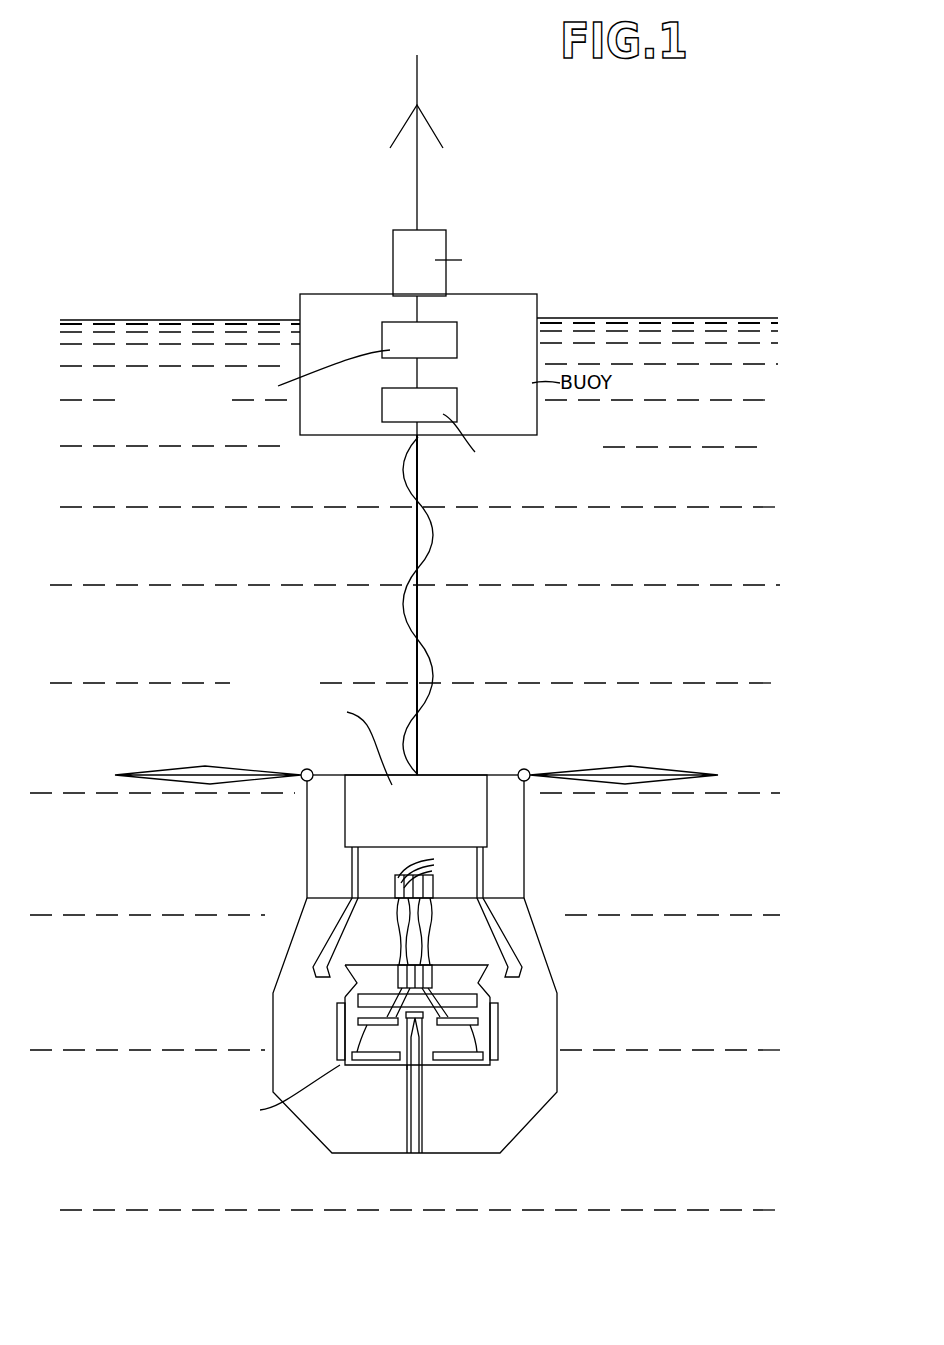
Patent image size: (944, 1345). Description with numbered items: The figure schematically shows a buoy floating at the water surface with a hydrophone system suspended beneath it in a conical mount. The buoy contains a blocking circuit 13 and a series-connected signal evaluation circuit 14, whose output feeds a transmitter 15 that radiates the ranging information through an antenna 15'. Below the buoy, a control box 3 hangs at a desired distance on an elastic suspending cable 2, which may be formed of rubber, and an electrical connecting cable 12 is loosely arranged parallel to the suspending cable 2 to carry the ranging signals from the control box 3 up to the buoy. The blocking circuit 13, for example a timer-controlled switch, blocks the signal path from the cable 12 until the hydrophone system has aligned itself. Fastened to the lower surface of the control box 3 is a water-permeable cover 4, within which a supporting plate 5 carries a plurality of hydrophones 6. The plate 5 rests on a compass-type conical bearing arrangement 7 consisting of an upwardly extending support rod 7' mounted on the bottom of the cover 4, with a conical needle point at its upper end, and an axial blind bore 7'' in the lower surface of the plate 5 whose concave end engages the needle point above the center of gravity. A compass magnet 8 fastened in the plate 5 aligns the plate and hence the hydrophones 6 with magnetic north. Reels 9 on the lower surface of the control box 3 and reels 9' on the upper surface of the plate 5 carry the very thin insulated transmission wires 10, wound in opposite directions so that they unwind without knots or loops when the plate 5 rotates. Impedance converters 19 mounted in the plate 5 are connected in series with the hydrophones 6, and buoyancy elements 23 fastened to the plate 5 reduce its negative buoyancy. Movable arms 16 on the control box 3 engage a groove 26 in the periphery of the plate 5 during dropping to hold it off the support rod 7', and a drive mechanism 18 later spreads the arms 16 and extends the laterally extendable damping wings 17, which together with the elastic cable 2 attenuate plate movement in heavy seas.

The elastic suspending cable 2 is at (423, 481).
The control box 3 is at (502, 843).
The cover 4 is at (548, 984).
The supporting plate 5 is at (478, 1037).
The hydrophones 6 is at (368, 1060).
The conical bearing arrangement 7 is at (263, 1085).
The support rod 7' is at (430, 1082).
The axial blind bore 7'' is at (392, 1078).
The compass magnet 8 is at (360, 1000).
The reels 9 is at (424, 877).
The reels 9' is at (414, 991).
The transmission wires 10 is at (403, 925).
The electrical connecting cable 12 is at (436, 533).
The blocking circuit 13 is at (448, 406).
The signal evaluation circuit 14 is at (448, 331).
The transmitter 15 is at (476, 255).
The antenna 15' is at (430, 142).
The movable arms 16 is at (340, 919).
The damping wings 17 is at (211, 767).
The drive mechanism 18 is at (458, 782).
The impedance converters 19 is at (362, 1021).
The buoyancy elements 23 is at (340, 1037).
The groove 26 is at (490, 984).